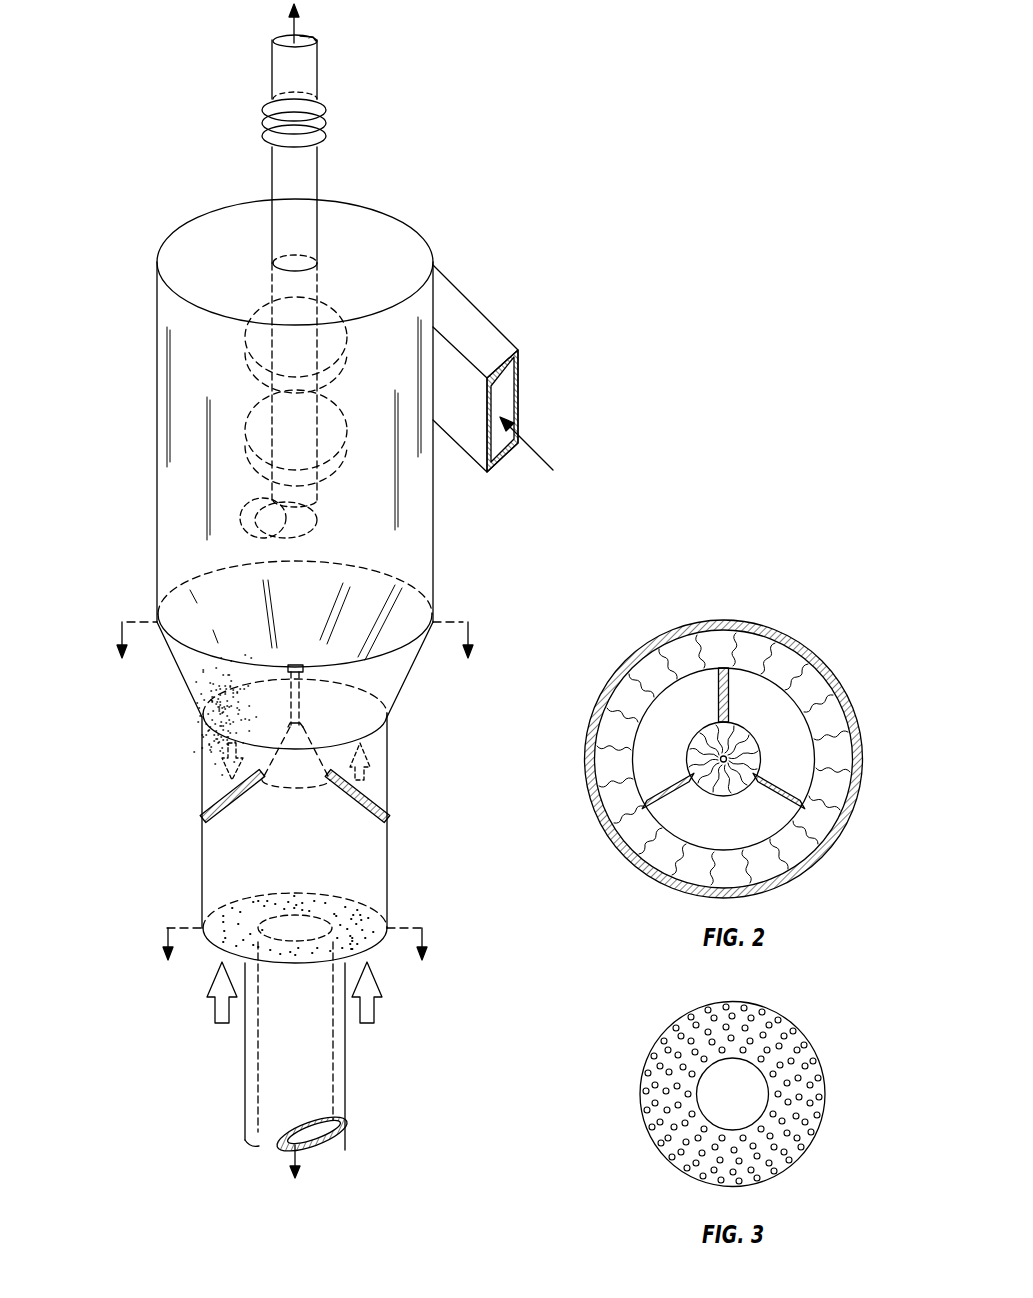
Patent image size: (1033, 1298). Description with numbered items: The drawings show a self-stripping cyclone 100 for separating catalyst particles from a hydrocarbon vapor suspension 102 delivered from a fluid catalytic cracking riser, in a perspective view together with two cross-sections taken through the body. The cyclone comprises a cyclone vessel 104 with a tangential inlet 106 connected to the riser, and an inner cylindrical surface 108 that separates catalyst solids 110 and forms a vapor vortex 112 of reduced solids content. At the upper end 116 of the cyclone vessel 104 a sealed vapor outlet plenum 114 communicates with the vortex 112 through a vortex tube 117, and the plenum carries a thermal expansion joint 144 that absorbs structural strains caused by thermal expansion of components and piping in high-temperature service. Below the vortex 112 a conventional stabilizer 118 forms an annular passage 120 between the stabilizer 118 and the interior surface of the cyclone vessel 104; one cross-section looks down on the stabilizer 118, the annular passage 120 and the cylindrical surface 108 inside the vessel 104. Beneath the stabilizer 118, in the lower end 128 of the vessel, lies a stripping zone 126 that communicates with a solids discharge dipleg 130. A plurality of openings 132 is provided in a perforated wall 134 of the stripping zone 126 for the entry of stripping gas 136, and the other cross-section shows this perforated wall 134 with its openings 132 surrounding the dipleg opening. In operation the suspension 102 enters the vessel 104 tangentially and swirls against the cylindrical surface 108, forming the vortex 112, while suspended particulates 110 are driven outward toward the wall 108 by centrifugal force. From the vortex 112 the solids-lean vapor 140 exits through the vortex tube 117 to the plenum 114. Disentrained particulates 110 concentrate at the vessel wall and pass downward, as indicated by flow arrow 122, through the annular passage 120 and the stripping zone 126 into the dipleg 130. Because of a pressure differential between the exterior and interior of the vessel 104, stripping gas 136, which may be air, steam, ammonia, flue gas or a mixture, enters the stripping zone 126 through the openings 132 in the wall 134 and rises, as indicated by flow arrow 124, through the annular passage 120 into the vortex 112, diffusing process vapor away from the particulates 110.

In FIG. 1, the self-stripping cyclone 100 is at (521, 153).
In FIG. 1, the hydrocarbon vapor suspension 102 is at (533, 444).
In FIG. 1, the cyclone vessel 104 is at (157, 328).
In FIG. 2, the cyclone vessel 104 is at (727, 621).
In FIG. 1, the tangential inlet 106 is at (488, 317).
In FIG. 1, the inner cylindrical surface 108 is at (158, 504).
In FIG. 2, the inner cylindrical surface 108 is at (620, 690).
In FIG. 1, the catalyst solids 110 is at (212, 662).
In FIG. 1, the vapor vortex 112 is at (305, 519).
In FIG. 1, the sealed vapor outlet plenum 114 is at (318, 182).
In FIG. 1, the upper end 116 is at (192, 237).
In FIG. 1, the vortex tube 117 is at (312, 436).
In FIG. 1, the stabilizer 118 is at (306, 724).
In FIG. 2, the stabilizer 118 is at (722, 792).
In FIG. 1, the annular passage 120 is at (373, 791).
In FIG. 2, the annular passage 120 is at (695, 820).
In FIG. 1, the flow arrow 122 is at (201, 753).
In FIG. 1, the flow arrow 124 is at (372, 763).
In FIG. 1, the stripping zone 126 is at (312, 833).
In FIG. 1, the lower end 128 is at (388, 900).
In FIG. 2, the lower end 128 is at (781, 637).
In FIG. 3, the lower end 128 is at (650, 1136).
In FIG. 1, the solids discharge dipleg 130 is at (245, 1080).
In FIG. 1, the openings 132 is at (297, 893).
In FIG. 3, the openings 132 is at (698, 1168).
In FIG. 3, the perforated wall 134 is at (667, 1044).
In FIG. 1, the stripping gas 136 is at (220, 1021).
In FIG. 1, the solids-lean vapor 140 is at (298, 27).
In FIG. 1, the thermal expansion joint 144 is at (328, 109).